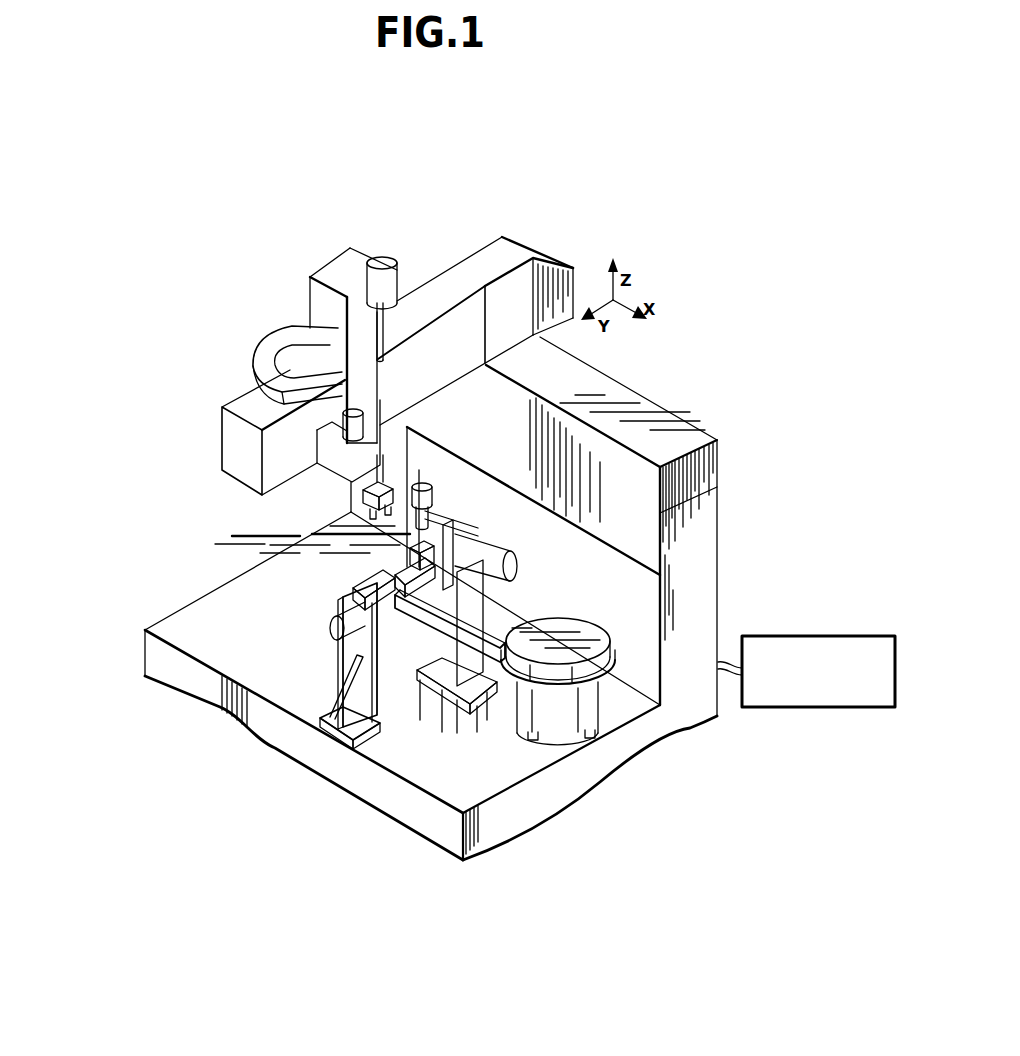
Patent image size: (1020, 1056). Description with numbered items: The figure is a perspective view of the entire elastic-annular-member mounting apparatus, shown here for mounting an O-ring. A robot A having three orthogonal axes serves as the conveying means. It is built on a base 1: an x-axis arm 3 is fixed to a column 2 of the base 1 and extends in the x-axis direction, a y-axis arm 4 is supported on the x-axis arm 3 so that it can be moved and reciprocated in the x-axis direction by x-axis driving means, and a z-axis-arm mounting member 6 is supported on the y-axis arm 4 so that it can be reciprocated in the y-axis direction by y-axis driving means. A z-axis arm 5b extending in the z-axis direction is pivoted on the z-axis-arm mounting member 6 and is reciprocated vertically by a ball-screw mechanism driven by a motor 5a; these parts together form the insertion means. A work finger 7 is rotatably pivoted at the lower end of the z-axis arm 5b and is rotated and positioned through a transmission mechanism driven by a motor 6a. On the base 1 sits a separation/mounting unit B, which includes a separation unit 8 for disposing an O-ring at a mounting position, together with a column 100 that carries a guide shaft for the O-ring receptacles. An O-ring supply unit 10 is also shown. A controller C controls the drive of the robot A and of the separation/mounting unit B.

The robot having three orthogonal axes A is at (520, 226).
The base 1 is at (418, 772).
The column 2 is at (718, 517).
The x-axis arm 3 is at (693, 421).
The y-axis arm 4 is at (247, 402).
The motor 5a is at (383, 309).
The z-axis arm 5b is at (347, 313).
The z-axis-arm mounting member 6 is at (400, 418).
The motor 6a is at (367, 433).
The work finger 7 is at (363, 503).
The separation unit 8 is at (462, 514).
The O-ring supply unit 10 is at (548, 672).
The column 100 is at (340, 658).
The separation/mounting unit B is at (273, 710).
The controller C is at (807, 636).